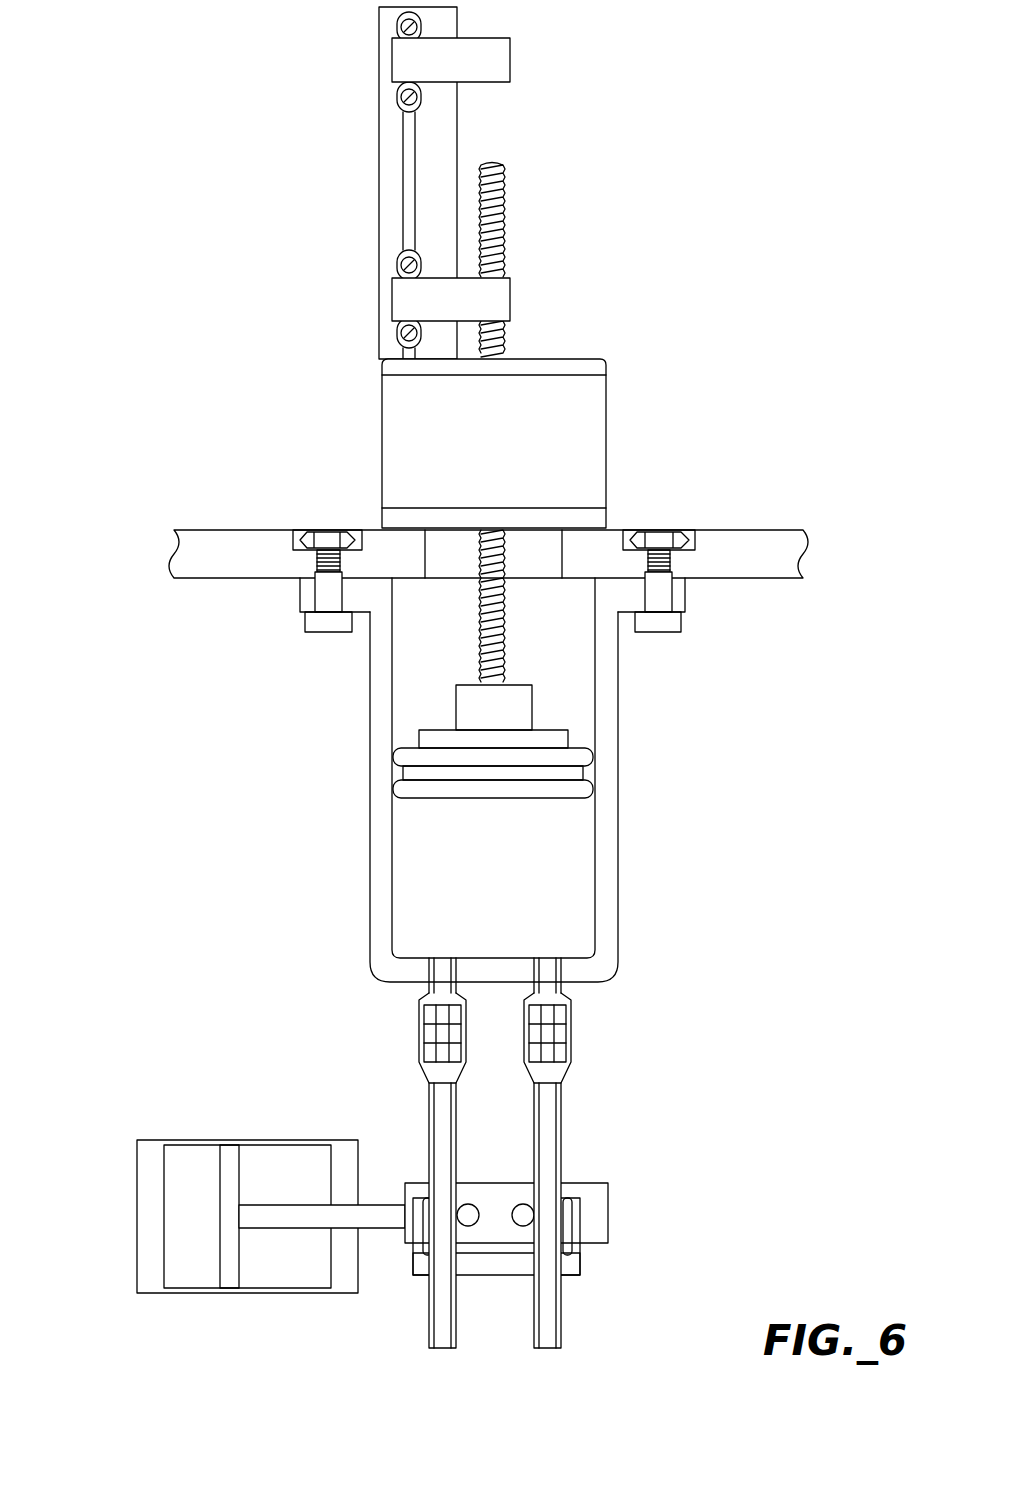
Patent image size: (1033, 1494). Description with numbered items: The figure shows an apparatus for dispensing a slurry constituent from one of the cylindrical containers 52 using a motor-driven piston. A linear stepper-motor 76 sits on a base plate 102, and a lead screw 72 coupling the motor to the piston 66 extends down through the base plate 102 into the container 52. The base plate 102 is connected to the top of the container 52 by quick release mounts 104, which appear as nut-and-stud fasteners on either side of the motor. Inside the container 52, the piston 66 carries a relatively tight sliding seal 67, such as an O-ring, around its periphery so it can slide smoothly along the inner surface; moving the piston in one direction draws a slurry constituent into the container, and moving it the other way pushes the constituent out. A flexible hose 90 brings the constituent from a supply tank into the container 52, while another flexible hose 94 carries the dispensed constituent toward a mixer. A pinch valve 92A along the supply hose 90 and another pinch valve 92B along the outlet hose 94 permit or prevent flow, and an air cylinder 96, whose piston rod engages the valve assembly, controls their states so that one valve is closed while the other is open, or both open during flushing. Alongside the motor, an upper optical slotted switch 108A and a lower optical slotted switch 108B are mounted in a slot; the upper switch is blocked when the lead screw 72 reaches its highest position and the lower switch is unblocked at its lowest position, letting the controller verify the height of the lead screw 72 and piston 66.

The cylindrical container 52 is at (370, 775).
The piston 66 is at (565, 798).
The sliding seal 67 is at (583, 772).
The lead screw 72 is at (505, 190).
The linear stepper-motor 76 is at (606, 428).
The flexible hose 90 is at (432, 1323).
The pinch valve 92A is at (412, 1183).
The pinch valve 92B is at (590, 1183).
The flexible hose 94 is at (563, 1317).
The air cylinder 96 is at (277, 1140).
The base plate 102 is at (223, 530).
The quick release mount 104 is at (660, 632).
The upper optical slotted switch 108A is at (392, 61).
The lower optical slotted switch 108B is at (392, 300).